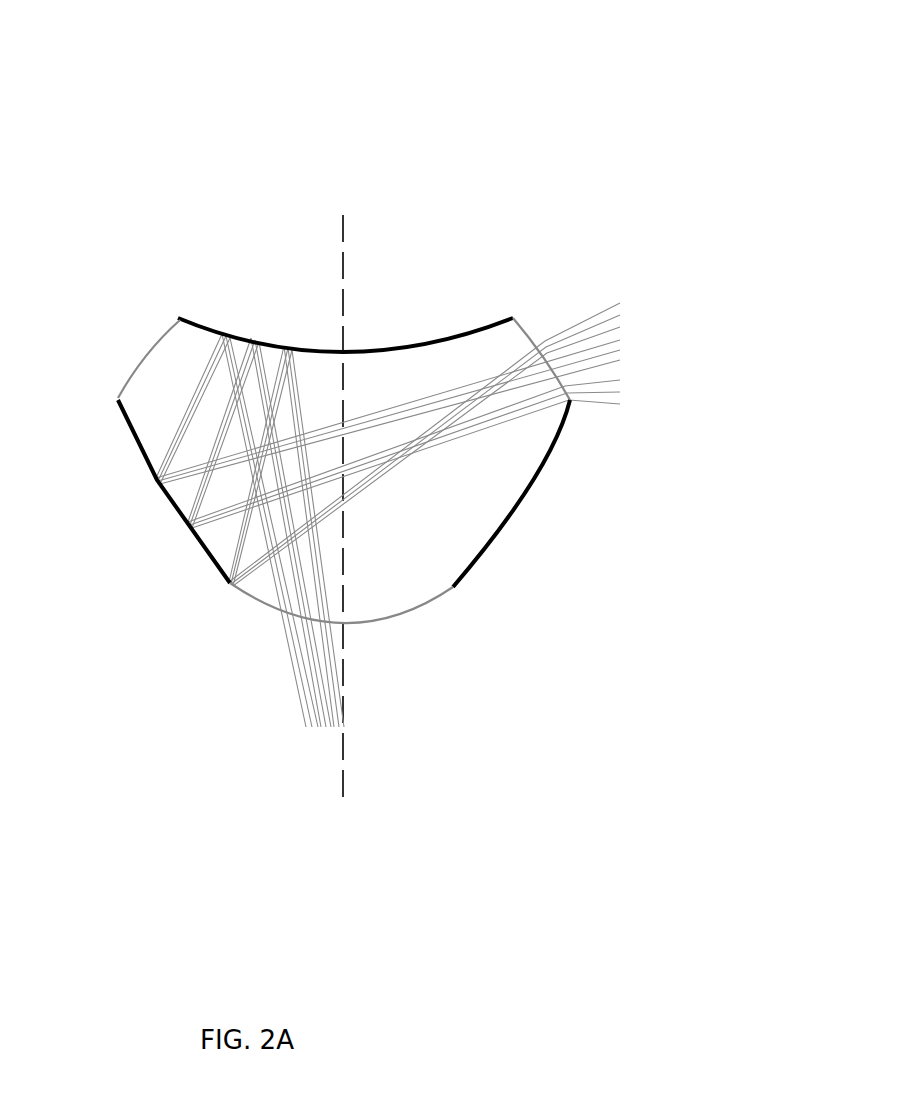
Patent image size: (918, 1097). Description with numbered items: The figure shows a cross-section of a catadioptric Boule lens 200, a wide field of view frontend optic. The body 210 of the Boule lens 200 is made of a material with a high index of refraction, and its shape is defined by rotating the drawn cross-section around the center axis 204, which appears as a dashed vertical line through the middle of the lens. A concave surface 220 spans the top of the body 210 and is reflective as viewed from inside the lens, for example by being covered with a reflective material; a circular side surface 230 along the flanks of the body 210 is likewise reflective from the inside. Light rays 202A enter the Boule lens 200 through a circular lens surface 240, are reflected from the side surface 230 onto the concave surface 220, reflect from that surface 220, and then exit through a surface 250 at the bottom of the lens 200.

The Boule lens 200 is at (321, 46).
The light rays 202A is at (622, 389).
The center axis 204 is at (359, 510).
The body 210 is at (456, 482).
The concave surface 220 is at (434, 339).
The circular side surface 230 is at (129, 425).
The lens surface 240 is at (143, 350).
The surface 250 is at (430, 608).